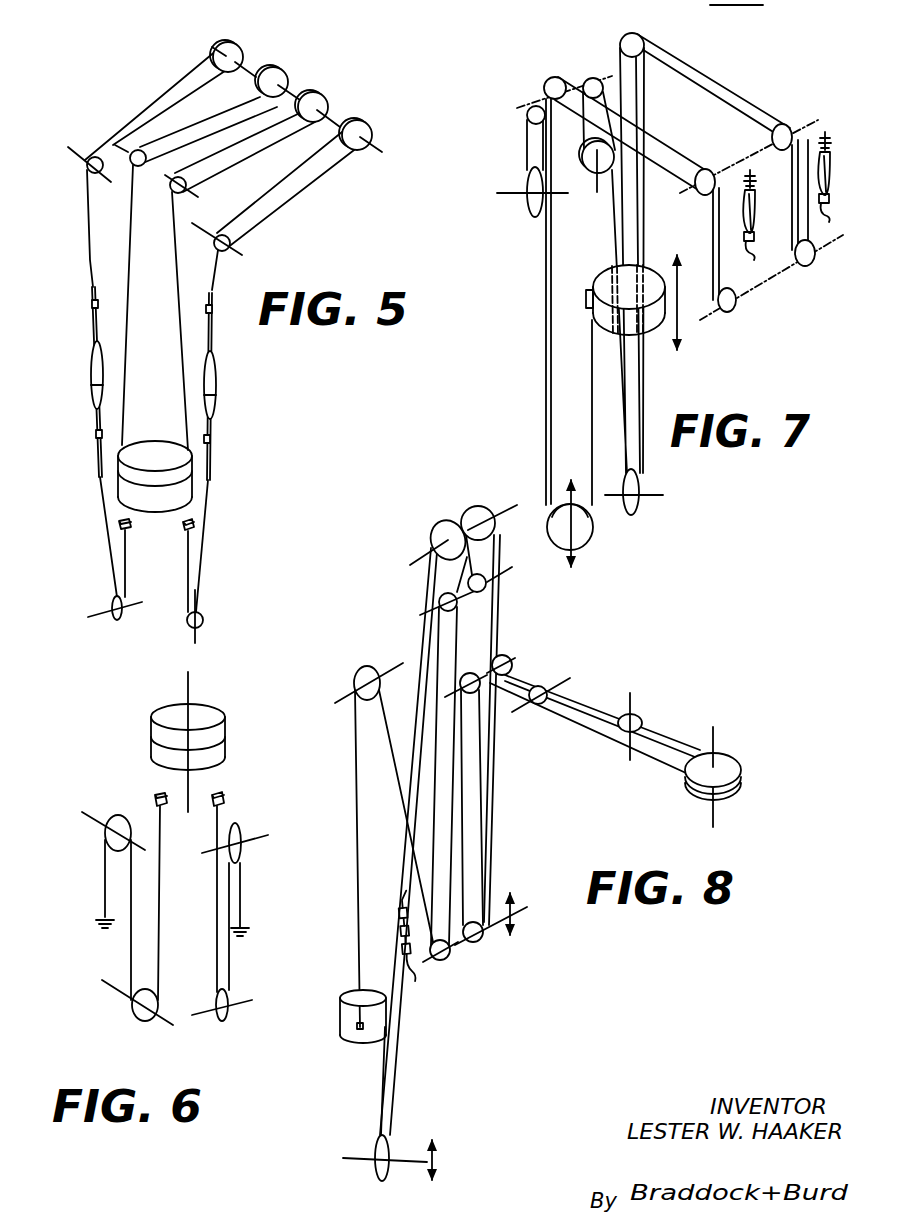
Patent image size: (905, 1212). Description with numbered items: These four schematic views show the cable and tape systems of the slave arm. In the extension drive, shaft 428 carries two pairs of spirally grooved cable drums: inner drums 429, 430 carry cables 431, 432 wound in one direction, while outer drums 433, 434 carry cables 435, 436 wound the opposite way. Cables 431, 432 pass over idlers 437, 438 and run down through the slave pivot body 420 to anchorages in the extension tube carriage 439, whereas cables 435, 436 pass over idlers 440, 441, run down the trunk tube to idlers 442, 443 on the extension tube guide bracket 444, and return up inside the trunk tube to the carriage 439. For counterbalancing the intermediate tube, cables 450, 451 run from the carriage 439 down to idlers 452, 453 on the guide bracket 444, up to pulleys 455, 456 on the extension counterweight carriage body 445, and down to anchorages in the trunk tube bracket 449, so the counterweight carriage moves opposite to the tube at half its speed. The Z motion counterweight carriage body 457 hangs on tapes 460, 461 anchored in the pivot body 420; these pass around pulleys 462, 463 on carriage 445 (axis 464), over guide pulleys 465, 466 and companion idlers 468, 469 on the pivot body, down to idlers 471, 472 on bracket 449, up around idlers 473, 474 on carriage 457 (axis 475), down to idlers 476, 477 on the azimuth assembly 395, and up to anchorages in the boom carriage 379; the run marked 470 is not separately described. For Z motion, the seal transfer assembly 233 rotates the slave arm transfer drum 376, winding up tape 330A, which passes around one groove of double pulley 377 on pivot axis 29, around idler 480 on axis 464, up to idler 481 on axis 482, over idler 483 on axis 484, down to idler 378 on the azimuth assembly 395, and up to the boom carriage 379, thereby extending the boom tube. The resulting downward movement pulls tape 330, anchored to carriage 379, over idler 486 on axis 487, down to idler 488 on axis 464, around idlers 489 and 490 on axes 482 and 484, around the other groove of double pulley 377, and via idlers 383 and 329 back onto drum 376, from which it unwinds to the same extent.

In FIG. 8, the pivot axis 29 is at (528, 652).
In FIG. 8, the seal transfer assembly 233 is at (711, 816).
In FIG. 8, the idler 329 is at (641, 715).
In FIG. 8, the tape 330 is at (585, 709).
In FIG. 8, the tape 330A is at (400, 1060).
In FIG. 8, the slave arm transfer drum 376 is at (728, 760).
In FIG. 8, the double pulley 377 is at (515, 665).
In FIG. 8, the idler 378 is at (375, 1172).
In FIG. 7, the boom carriage 379 is at (631, 265).
In FIG. 8, the boom carriage 379 is at (339, 998).
In FIG. 8, the idler 383 is at (539, 705).
In FIG. 7, the azimuth assembly 395 is at (672, 497).
In FIG. 7, the slave pivot body 420 is at (837, 125).
In FIG. 5, the shaft 428 is at (210, 46).
In FIG. 5, the inner drum 429 is at (325, 93).
In FIG. 5, the inner drum 430 is at (282, 62).
In FIG. 5, the cable 431 is at (255, 147).
In FIG. 5, the cable 432 is at (231, 112).
In FIG. 5, the outer drum 433 is at (367, 130).
In FIG. 5, the outer drum 434 is at (242, 43).
In FIG. 5, the cable 435 is at (283, 180).
In FIG. 5, the cable 436 is at (157, 100).
In FIG. 5, the idler 437 is at (188, 182).
In FIG. 5, the idler 438 is at (148, 155).
In FIG. 5, the extension tube carriage 439 is at (157, 507).
In FIG. 6, the extension tube carriage 439 is at (219, 712).
In FIG. 5, the idler 440 is at (232, 242).
In FIG. 5, the idler 441 is at (97, 175).
In FIG. 5, the idler 442 is at (203, 621).
In FIG. 5, the idler 443 is at (116, 620).
In FIG. 5, the extension tube guide bracket 444 is at (218, 606).
In FIG. 6, the extension tube guide bracket 444 is at (125, 1013).
In FIG. 7, the extension counterweight carriage body 445 is at (823, 283).
In FIG. 6, the extension counterweight carriage body 445 is at (103, 853).
In FIG. 7, the trunk tube bracket 449 is at (523, 198).
In FIG. 6, the trunk tube bracket 449 is at (98, 926).
In FIG. 6, the cable 450 is at (158, 818).
In FIG. 6, the cable 451 is at (222, 815).
In FIG. 6, the idler 452 is at (140, 1022).
In FIG. 6, the idler 453 is at (225, 1023).
In FIG. 6, the pulley 455 is at (110, 822).
In FIG. 6, the pulley 456 is at (242, 830).
In FIG. 7, the Z motion counterweight carriage body 457 is at (519, 121).
In FIG. 7, the tape 460 is at (650, 126).
In FIG. 7, the tape 461 is at (737, 95).
In FIG. 7, the pulley 462 is at (725, 315).
In FIG. 7, the pulley 463 is at (803, 266).
In FIG. 7, the axis 464 is at (832, 246).
In FIG. 8, the axis 464 is at (527, 907).
In FIG. 7, the guide pulley 465 is at (694, 178).
In FIG. 7, the guide pulley 466 is at (771, 133).
In FIG. 7, the companion idler 468 is at (550, 78).
In FIG. 7, the companion idler 469 is at (628, 38).
In FIG. 7, the belt 470 is at (664, 28).
In FIG. 7, the idler 471 is at (530, 217).
In FIG. 7, the idler 472 is at (592, 176).
In FIG. 7, the idler 473 is at (530, 110).
In FIG. 7, the idler 474 is at (590, 79).
In FIG. 7, the axis 475 is at (521, 133).
In FIG. 7, the idler 476 is at (585, 545).
In FIG. 7, the idler 477 is at (640, 515).
In FIG. 8, the idler 480 is at (446, 962).
In FIG. 8, the idler 481 is at (451, 611).
In FIG. 8, the axis 482 is at (437, 610).
In FIG. 8, the idler 483 is at (440, 522).
In FIG. 8, the axis 484 is at (425, 556).
In FIG. 8, the idler 486 is at (359, 668).
In FIG. 8, the axis 487 is at (356, 700).
In FIG. 8, the idler 488 is at (480, 942).
In FIG. 8, the idler 489 is at (475, 594).
In FIG. 8, the idler 490 is at (479, 505).